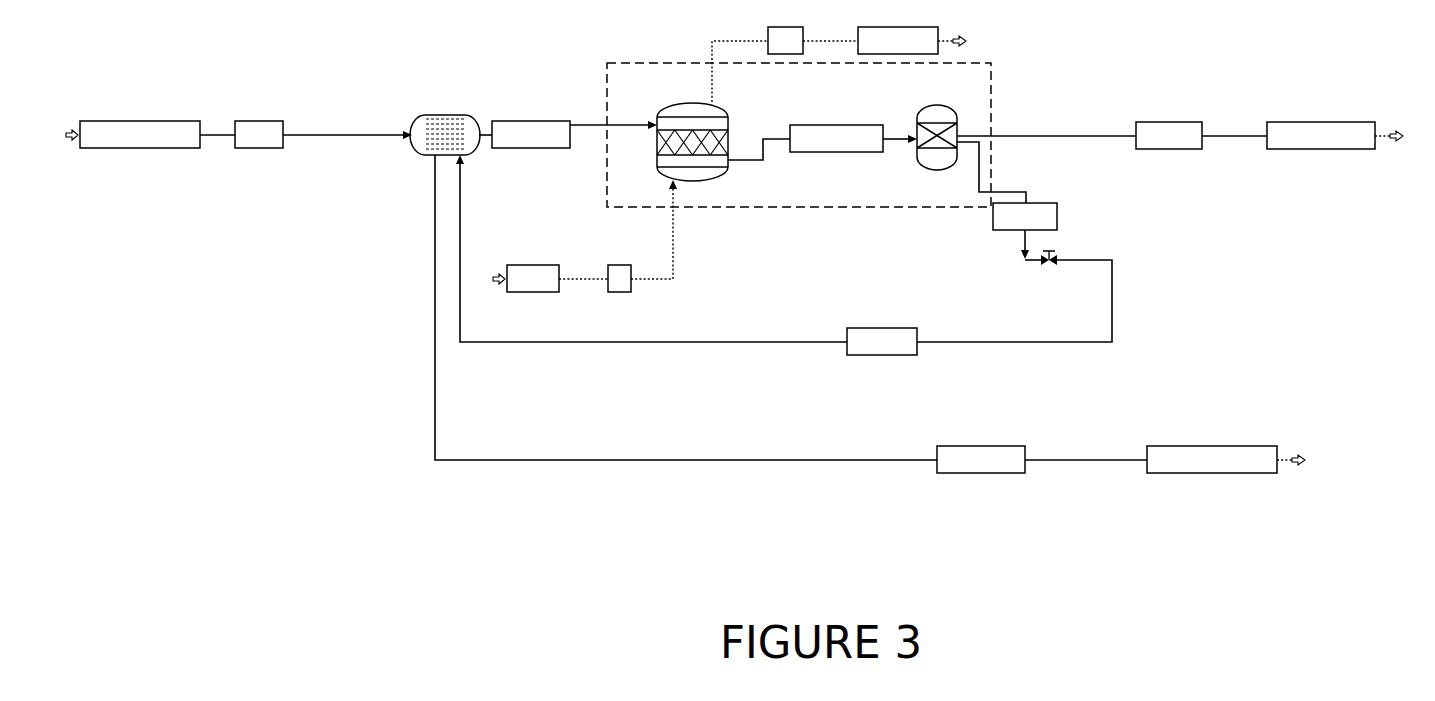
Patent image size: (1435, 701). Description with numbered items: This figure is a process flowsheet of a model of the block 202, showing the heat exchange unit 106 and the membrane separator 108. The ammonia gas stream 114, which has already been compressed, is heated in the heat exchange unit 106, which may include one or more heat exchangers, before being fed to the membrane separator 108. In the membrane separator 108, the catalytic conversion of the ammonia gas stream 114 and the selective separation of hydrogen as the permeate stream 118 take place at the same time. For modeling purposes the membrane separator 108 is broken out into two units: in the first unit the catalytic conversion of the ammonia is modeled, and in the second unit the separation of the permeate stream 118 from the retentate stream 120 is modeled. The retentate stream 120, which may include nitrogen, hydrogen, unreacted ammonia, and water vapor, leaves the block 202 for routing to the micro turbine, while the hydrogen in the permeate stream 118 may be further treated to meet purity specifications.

The heat exchange unit 106 is at (437, 113).
The membrane separator 108 is at (668, 62).
The ammonia gas stream 114 is at (310, 132).
The permeate stream 118 is at (1073, 344).
The retentate stream 120 is at (1057, 134).
The block 202 is at (838, 606).